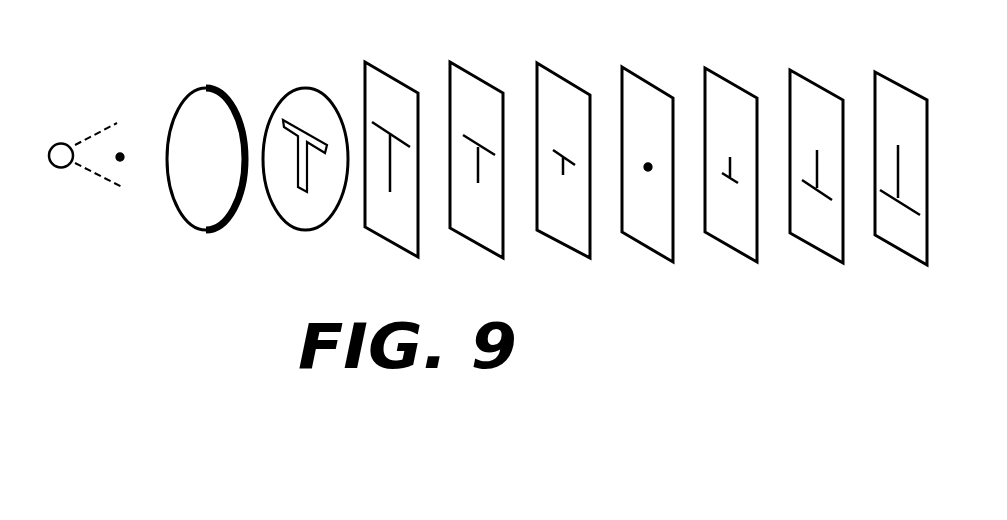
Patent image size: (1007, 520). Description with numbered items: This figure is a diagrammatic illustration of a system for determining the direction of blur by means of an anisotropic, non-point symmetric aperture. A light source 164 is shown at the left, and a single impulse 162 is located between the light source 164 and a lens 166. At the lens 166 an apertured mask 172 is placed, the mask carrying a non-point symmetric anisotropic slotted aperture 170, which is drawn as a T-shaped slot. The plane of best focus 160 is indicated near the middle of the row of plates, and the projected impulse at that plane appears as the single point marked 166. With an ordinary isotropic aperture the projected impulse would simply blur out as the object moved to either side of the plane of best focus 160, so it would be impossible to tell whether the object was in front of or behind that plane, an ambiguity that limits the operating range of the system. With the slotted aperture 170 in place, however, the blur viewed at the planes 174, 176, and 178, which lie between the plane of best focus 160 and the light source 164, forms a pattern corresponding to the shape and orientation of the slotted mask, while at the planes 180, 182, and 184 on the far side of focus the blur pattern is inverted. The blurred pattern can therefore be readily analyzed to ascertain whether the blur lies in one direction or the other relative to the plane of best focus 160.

The plane of best focus 160 is at (643, 64).
The impulse 162 is at (124, 160).
The light source 164 is at (62, 136).
The lens 166 is at (203, 92).
The non-point symmetric anisotropic slotted aperture 170 is at (307, 191).
The apertured mask 172 is at (308, 89).
The plane 174 is at (575, 240).
The plane 176 is at (492, 240).
The plane 178 is at (402, 237).
The plane 180 is at (740, 240).
The plane 182 is at (823, 237).
The plane 184 is at (902, 240).